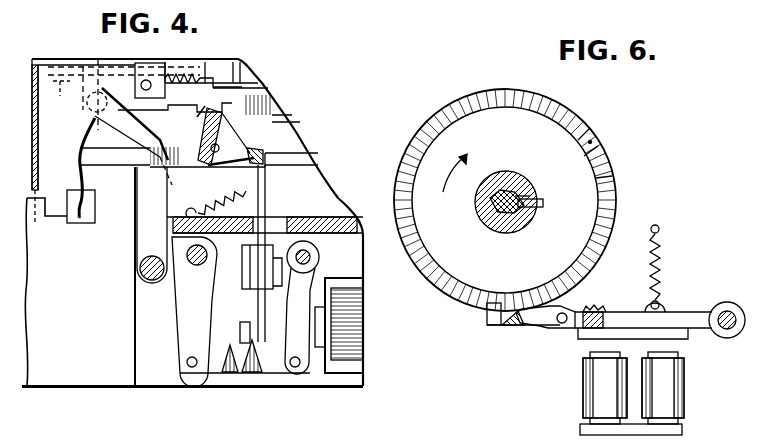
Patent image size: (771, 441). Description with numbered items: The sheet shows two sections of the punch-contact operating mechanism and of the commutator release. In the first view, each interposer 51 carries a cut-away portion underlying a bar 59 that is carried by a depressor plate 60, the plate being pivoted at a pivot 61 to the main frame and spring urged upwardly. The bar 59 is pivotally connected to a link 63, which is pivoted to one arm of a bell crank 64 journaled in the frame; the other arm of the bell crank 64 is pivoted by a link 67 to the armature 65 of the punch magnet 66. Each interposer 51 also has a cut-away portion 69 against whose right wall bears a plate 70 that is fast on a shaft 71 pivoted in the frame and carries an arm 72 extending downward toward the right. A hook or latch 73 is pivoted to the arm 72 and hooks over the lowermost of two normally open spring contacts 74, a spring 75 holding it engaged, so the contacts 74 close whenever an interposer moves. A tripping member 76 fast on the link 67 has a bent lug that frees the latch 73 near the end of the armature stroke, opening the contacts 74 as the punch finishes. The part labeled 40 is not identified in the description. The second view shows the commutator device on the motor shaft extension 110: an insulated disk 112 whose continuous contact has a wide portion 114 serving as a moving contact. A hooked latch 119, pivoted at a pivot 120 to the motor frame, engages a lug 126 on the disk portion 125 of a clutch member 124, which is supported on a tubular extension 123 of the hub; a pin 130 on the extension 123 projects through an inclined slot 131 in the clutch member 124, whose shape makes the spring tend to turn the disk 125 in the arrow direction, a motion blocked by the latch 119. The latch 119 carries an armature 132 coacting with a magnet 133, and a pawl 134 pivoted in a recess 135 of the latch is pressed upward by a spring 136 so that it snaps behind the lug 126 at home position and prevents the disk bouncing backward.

In FIG. 4, the base 40 is at (77, 380).
In FIG. 4, the interposer 51 is at (292, 92).
In FIG. 4, the bar 59 is at (59, 100).
In FIG. 4, the depressor plate 60 is at (78, 60).
In FIG. 4, the pivot 61 is at (151, 62).
In FIG. 4, the link 63 is at (158, 183).
In FIG. 4, the bell crank 64 is at (190, 313).
In FIG. 4, the armature 65 is at (308, 270).
In FIG. 4, the punch magnet 66 is at (355, 313).
In FIG. 4, the link 67 is at (252, 375).
In FIG. 4, the cut-away portion 69 is at (188, 121).
In FIG. 4, the plate 70 is at (224, 131).
In FIG. 4, the shaft 71 is at (232, 142).
In FIG. 4, the arm 72 is at (262, 148).
In FIG. 4, the latch 73 is at (267, 203).
In FIG. 4, the spring contacts 74 is at (250, 287).
In FIG. 4, the spring 75 is at (265, 212).
In FIG. 4, the tripping member 76 is at (246, 335).
In FIG. 6, the motor shaft extension 110 is at (483, 168).
In FIG. 6, the insulated disk 112 is at (567, 108).
In FIG. 6, the wide portion 114 is at (596, 137).
In FIG. 6, the hooked latch 119 is at (683, 315).
In FIG. 6, the pivot 120 is at (727, 312).
In FIG. 6, the tubular extension 123 is at (485, 200).
In FIG. 6, the clutch member 124 is at (500, 225).
In FIG. 6, the disk portion 125 is at (613, 183).
In FIG. 6, the lug 126 is at (516, 288).
In FIG. 6, the pin 130 is at (540, 203).
In FIG. 6, the inclined slot 131 is at (530, 190).
In FIG. 6, the armature 132 is at (673, 332).
In FIG. 6, the magnet 133 is at (663, 388).
In FIG. 6, the pawl 134 is at (545, 330).
In FIG. 6, the recess 135 is at (524, 318).
In FIG. 6, the spring 136 is at (612, 298).